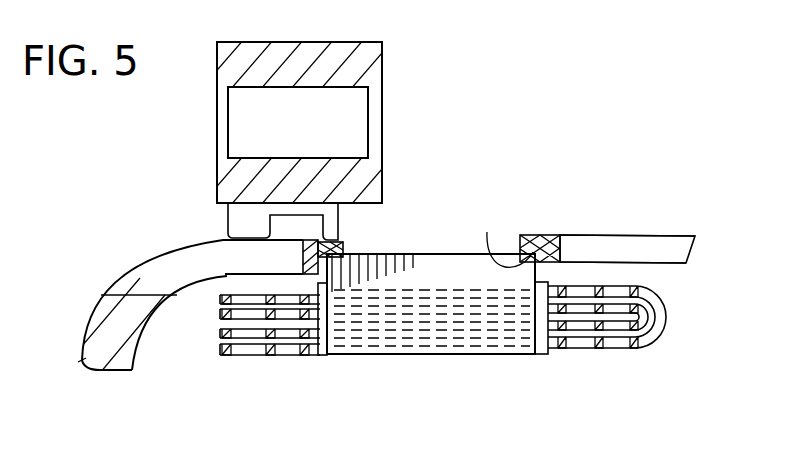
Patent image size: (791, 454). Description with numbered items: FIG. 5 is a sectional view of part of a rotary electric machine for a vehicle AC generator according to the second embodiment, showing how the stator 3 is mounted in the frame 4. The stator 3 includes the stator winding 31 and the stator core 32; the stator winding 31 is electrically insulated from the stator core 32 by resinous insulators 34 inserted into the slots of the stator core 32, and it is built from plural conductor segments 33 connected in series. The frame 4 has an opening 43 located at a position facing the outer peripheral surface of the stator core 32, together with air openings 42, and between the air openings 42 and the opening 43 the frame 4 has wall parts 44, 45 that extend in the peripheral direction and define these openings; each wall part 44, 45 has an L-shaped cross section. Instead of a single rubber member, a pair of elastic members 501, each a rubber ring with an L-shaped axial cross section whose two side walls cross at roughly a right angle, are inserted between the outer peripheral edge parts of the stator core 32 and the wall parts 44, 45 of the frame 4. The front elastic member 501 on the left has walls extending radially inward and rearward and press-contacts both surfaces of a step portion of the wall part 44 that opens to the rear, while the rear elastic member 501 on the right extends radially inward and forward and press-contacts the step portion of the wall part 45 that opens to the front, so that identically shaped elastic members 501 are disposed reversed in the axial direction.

The stator 3 is at (647, 270).
The frame 4 is at (103, 345).
The stator winding 31 is at (221, 272).
The stator core 32 is at (415, 275).
The conductor segment 33 is at (597, 265).
The resinous insulator 34 is at (548, 360).
The air opening 42 is at (163, 272).
The opening 43 is at (450, 240).
The wall part 44 is at (222, 236).
The wall part 45 is at (540, 232).
The elastic member 501 is at (345, 250).